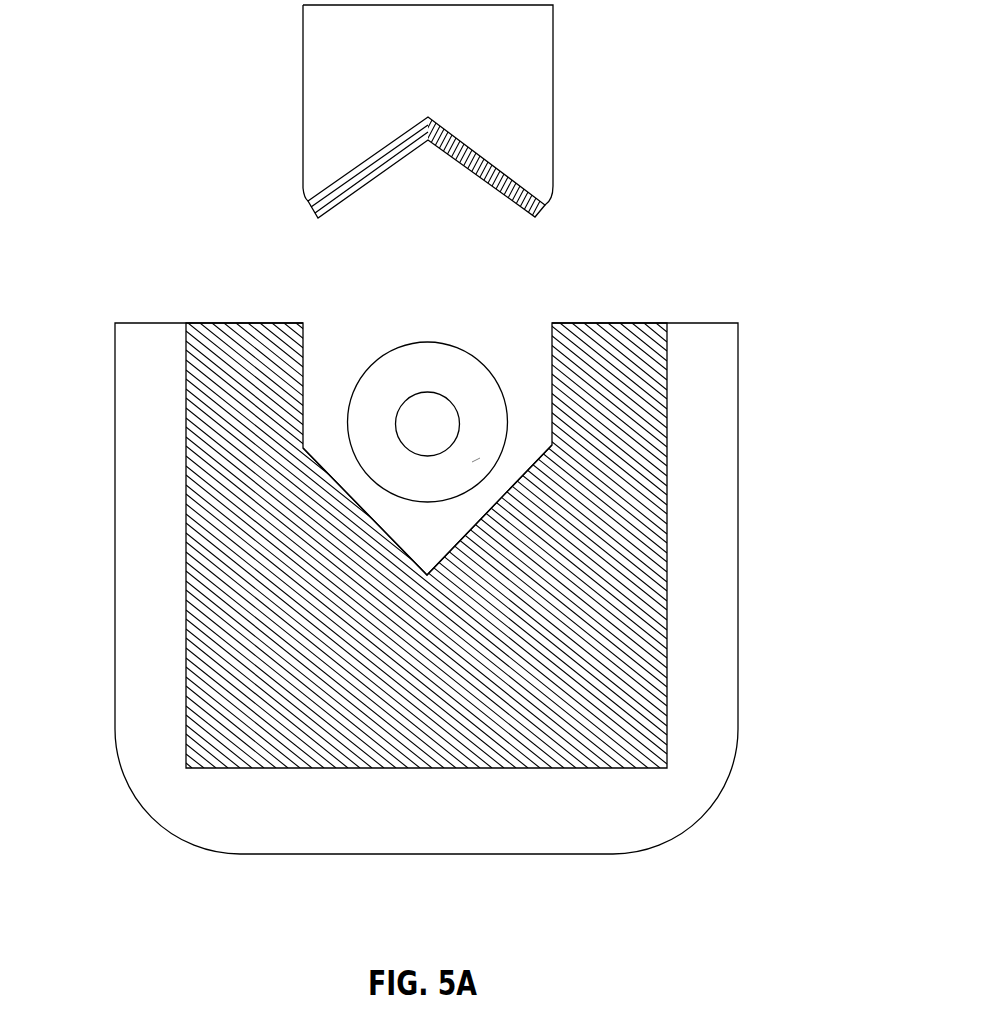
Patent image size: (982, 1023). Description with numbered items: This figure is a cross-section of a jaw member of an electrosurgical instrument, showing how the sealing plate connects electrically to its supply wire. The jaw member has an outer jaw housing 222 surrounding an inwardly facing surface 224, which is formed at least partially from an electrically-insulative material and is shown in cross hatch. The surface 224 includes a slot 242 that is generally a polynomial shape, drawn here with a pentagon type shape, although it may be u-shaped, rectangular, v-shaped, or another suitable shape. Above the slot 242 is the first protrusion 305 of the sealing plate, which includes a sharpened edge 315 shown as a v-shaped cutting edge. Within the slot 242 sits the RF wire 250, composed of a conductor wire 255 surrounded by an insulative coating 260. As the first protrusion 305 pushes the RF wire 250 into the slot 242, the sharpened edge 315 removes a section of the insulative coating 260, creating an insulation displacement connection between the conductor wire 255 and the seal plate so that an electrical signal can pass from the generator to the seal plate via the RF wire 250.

The first protrusion 305 is at (554, 80).
The sharpened edge 315 is at (543, 212).
The outer jaw housing 222 is at (607, 855).
The inwardly facing surface 224 is at (620, 372).
The slot 242 is at (334, 461).
The RF wire 250 is at (410, 346).
The conductor wire 255 is at (424, 408).
The insulative coating 260 is at (472, 462).